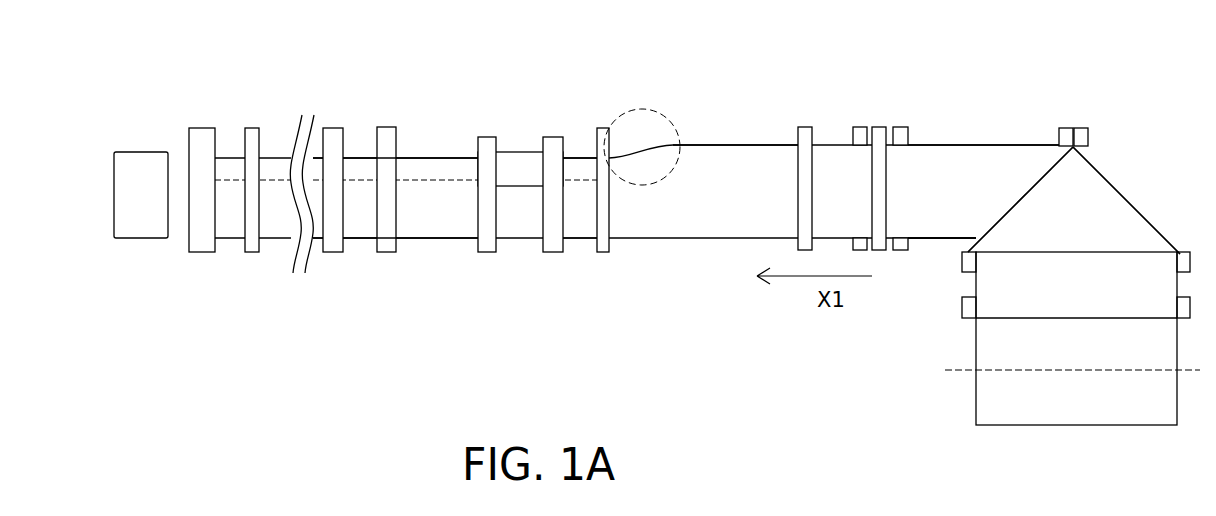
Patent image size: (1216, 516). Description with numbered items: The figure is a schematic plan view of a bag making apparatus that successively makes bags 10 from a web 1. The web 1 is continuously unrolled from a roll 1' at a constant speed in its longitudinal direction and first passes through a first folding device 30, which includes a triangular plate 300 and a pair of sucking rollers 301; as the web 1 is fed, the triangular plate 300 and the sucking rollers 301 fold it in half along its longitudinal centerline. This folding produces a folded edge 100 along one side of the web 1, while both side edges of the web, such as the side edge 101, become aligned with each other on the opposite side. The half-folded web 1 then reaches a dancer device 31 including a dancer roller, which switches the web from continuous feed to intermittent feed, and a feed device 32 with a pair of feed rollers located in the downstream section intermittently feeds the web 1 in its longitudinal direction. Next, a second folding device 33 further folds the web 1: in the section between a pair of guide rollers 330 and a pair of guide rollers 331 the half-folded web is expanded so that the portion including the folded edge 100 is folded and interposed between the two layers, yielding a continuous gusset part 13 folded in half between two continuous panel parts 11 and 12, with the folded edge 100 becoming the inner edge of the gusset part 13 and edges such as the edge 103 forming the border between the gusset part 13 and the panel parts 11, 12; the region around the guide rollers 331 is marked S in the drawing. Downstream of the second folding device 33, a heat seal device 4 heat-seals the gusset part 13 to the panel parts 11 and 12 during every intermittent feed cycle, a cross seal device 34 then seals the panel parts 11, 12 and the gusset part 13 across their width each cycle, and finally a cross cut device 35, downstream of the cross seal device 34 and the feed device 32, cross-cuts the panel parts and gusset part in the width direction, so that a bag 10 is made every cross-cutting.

The bag 10 is at (137, 152).
The cross cut device 35 is at (201, 128).
The feed device 32 is at (252, 128).
The cross seal device 34 is at (365, 117).
The edge of panel part 103 is at (430, 157).
The folded edge 100 is at (453, 178).
The heat seal device 4 is at (520, 129).
The gusset part 13 is at (577, 170).
The panel part 11 is at (570, 217).
The panel part 12 is at (585, 217).
The guide rollers 331 is at (602, 170).
The region S is at (643, 107).
The second folding device 33 is at (731, 96).
The guide rollers 330 is at (803, 127).
The dancer device 31 is at (886, 112).
The web 1 is at (983, 107).
The side edge of web 101 is at (935, 242).
The first folding device 30 is at (1136, 136).
The sucking rollers 301 is at (1083, 128).
The triangular plate 300 is at (1130, 205).
The roll 1' is at (1046, 391).